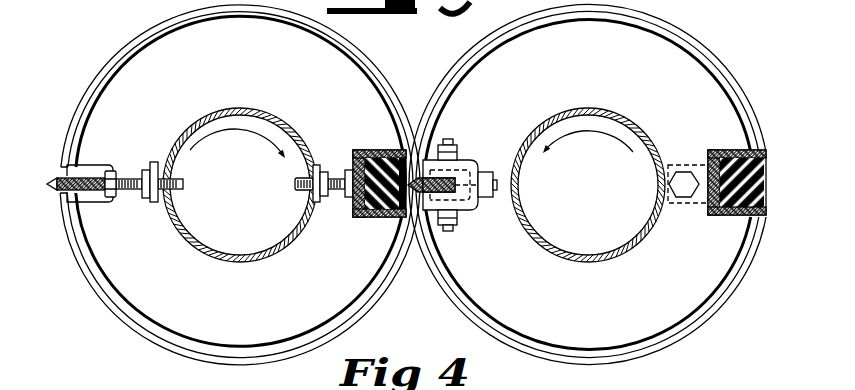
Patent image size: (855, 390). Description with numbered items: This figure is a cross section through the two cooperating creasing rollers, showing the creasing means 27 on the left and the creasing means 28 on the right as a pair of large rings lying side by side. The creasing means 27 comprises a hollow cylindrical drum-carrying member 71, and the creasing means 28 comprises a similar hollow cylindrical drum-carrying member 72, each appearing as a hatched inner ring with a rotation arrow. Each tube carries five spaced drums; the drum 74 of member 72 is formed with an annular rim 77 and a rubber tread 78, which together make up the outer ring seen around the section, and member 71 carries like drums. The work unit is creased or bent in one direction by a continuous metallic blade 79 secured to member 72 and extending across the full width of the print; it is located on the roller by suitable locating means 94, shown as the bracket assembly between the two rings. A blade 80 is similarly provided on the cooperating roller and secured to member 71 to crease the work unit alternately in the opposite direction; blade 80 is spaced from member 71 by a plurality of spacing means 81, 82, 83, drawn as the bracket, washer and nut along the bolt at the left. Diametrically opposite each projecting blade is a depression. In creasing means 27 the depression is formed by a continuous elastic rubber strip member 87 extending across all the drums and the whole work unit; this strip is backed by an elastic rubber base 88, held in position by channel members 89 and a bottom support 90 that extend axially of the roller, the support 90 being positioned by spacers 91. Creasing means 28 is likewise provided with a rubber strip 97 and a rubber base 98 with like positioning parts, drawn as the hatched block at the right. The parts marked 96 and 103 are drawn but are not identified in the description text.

The first drum 27 is at (88, 305).
The second drum 28 is at (597, 195).
The first sleeve 71 is at (217, 107).
The second sleeve 72 is at (580, 108).
The outer shell 74 is at (703, 47).
The inner liner 77 is at (572, 23).
The intermediate layer 78 is at (603, 6).
The bolt tip 79 is at (415, 217).
The pointed bolt 80 is at (50, 182).
The bracket 81 is at (128, 200).
The washer 82 is at (157, 163).
The nut 83 is at (147, 202).
The connecting member 87 is at (405, 140).
The resilient block 88 is at (385, 141).
The washer 89 is at (316, 165).
The washer 90 is at (350, 200).
The nut 91 is at (324, 197).
The clevis bracket 94 is at (467, 160).
The hex nut 96 is at (683, 165).
The resilient block 97 is at (738, 178).
The plate 98 is at (725, 215).
The support 103 is at (661, 379).